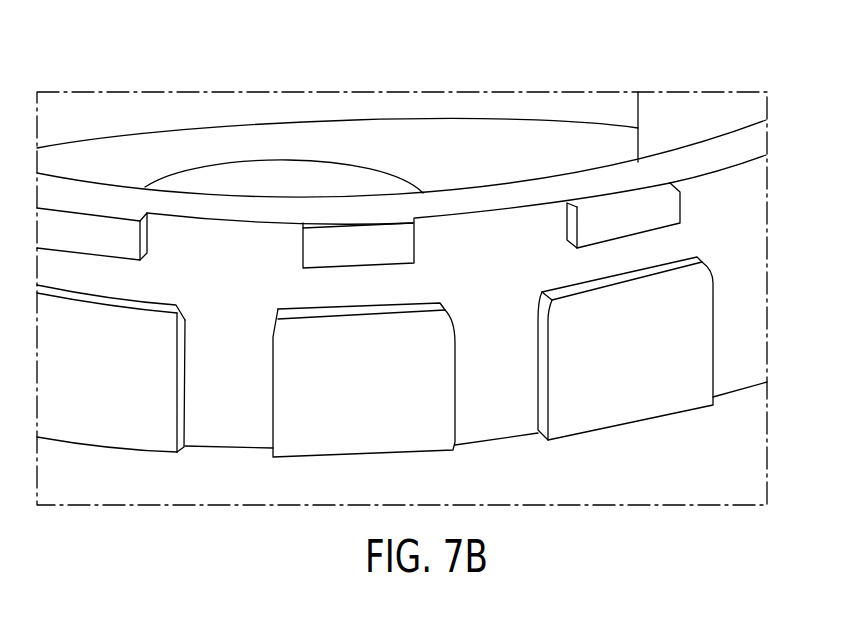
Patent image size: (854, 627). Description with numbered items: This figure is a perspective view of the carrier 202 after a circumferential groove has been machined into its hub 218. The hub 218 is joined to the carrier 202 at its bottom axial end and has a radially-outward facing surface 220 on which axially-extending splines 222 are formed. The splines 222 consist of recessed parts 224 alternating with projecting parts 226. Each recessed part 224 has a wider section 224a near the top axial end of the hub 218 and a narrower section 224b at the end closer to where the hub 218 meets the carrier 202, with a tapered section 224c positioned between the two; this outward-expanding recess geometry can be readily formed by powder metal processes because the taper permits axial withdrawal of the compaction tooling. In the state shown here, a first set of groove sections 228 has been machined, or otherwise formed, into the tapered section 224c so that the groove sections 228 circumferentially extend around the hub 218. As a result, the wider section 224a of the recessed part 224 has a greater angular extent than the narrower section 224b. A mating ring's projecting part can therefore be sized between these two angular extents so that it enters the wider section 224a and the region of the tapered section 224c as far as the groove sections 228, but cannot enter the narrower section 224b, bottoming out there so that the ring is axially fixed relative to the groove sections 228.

The carrier 202 is at (505, 80).
The hub 218 is at (497, 198).
The splines 222 is at (174, 247).
The recessed parts 224 is at (235, 432).
The wider section 224a is at (248, 255).
The narrower section 224b is at (248, 374).
The tapered section 224c is at (248, 298).
The projecting parts 226 is at (85, 423).
The groove sections 228 is at (70, 275).
The radially-outward facing surface 220 is at (635, 405).